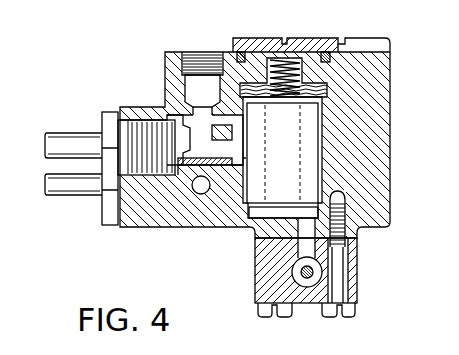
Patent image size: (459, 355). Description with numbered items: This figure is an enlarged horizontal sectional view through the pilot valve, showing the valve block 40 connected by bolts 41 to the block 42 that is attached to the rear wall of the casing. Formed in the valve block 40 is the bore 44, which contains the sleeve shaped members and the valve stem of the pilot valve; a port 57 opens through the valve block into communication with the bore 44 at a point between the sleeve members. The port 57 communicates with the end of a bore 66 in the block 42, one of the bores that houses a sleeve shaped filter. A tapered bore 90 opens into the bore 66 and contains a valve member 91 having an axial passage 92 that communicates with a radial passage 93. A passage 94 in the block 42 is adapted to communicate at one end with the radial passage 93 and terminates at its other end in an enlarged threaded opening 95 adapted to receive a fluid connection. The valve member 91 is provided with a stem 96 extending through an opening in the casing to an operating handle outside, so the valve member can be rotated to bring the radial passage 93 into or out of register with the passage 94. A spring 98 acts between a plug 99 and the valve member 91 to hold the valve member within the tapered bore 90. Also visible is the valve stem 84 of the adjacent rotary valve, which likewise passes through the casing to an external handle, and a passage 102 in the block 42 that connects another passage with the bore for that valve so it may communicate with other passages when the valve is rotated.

The valve block 40 is at (358, 287).
The bolts 41 is at (348, 316).
The block 42 is at (392, 86).
The bore 44 is at (303, 284).
The port 57 is at (302, 252).
The bore 66 is at (318, 178).
The valve stem 84 is at (85, 198).
The tapered bore 90 is at (242, 166).
The valve member 91 is at (180, 113).
The axial passage 92 is at (218, 148).
The radial passage 93 is at (205, 121).
The passage 94 is at (200, 113).
The enlarged threaded opening 95 is at (222, 67).
The stem 96 is at (80, 133).
The spring 98 is at (147, 118).
The plug 99 is at (103, 117).
The passage 102 is at (192, 187).